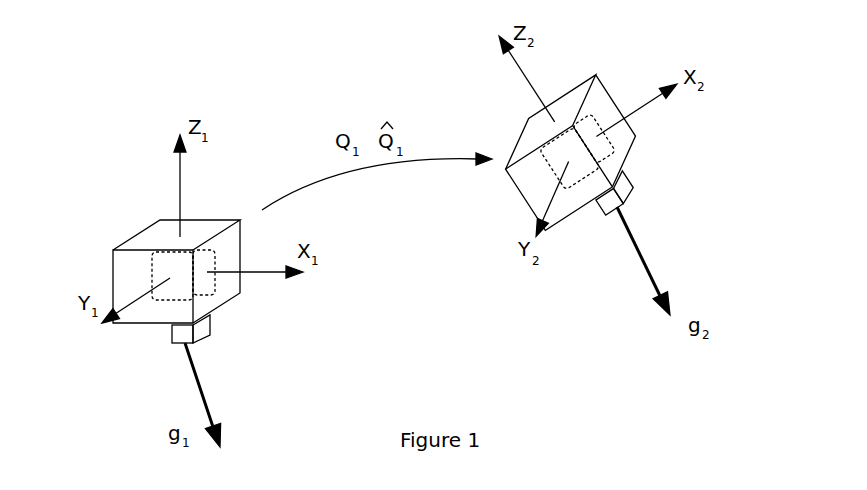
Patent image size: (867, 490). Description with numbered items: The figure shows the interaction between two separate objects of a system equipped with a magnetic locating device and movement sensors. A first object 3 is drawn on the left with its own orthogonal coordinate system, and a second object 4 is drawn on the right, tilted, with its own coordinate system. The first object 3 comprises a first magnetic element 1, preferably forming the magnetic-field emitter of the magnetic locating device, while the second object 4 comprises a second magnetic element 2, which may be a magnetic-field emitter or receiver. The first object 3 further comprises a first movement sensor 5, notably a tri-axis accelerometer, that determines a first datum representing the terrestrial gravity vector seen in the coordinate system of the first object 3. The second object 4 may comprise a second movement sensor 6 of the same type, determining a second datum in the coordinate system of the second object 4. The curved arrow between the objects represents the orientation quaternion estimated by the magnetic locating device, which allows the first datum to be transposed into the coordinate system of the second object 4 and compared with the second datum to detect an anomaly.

The first magnetic element 1 is at (153, 263).
The second magnetic element 2 is at (578, 152).
The first object 3 is at (123, 348).
The second object 4 is at (569, 118).
The first movement sensor 5 is at (203, 330).
The second movement sensor 6 is at (613, 193).